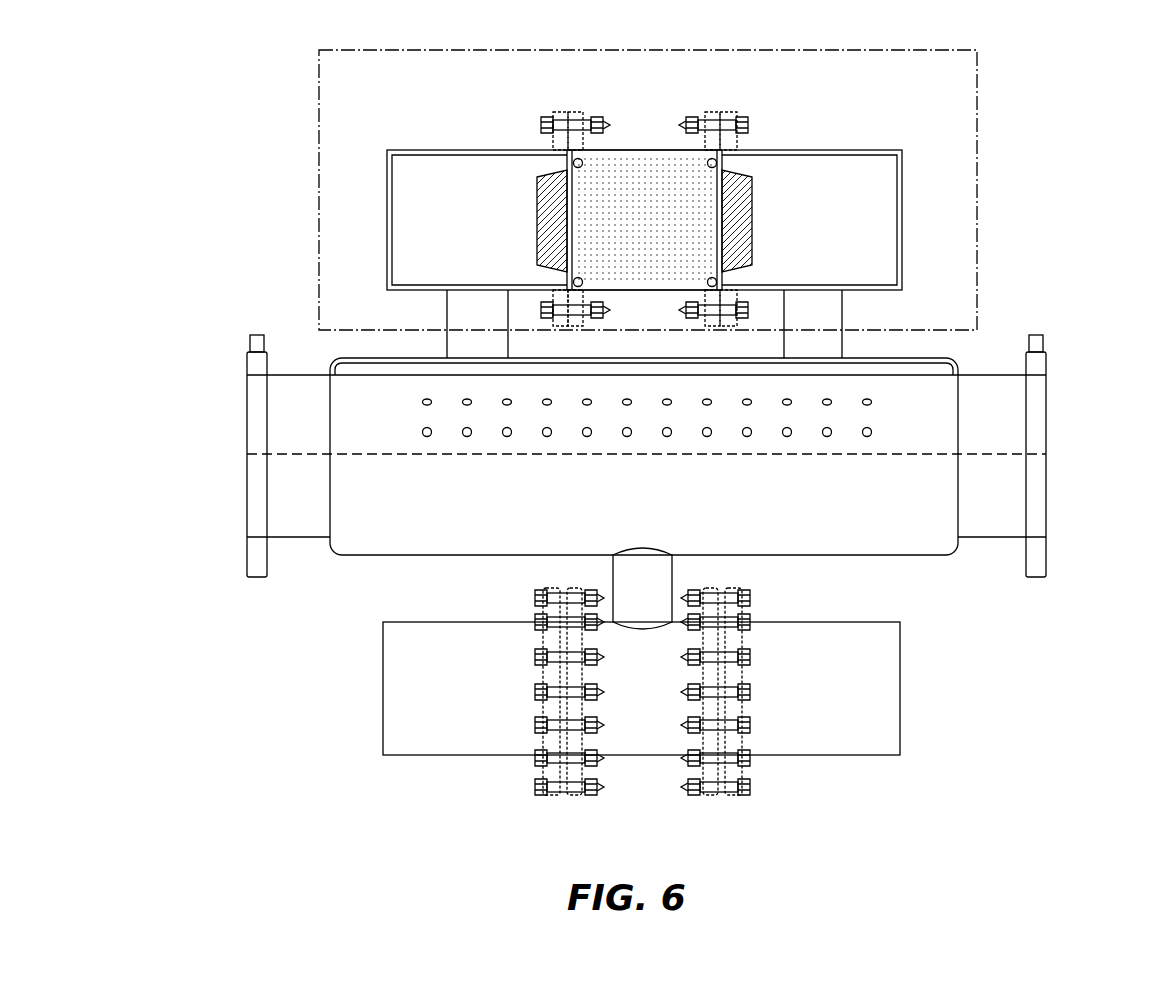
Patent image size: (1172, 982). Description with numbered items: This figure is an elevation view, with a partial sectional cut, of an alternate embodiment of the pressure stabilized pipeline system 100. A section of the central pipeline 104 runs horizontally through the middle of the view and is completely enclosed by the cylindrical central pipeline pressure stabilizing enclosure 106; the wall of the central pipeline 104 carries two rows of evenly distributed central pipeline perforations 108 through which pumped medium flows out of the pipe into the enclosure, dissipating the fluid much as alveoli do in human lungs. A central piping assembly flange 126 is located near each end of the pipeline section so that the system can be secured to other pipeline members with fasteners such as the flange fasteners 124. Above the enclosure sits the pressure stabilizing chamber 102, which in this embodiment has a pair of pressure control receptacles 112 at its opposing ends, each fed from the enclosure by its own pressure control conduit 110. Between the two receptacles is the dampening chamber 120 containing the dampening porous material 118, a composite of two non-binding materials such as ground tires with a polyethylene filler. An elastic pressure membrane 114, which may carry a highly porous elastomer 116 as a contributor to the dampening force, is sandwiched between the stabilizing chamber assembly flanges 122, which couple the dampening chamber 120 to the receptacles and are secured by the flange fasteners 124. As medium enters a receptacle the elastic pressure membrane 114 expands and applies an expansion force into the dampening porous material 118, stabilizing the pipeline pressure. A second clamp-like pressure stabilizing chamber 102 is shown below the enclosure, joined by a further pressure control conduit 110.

The pressure stabilized pipeline system 100 is at (657, 439).
The pressure stabilizing chamber 102 is at (977, 195).
The central pipeline 104 is at (305, 520).
The cylindrical central pipeline pressure stabilizing enclosure 106 is at (437, 538).
The central pipeline perforations 108 is at (506, 406).
The pressure control conduit 110 is at (472, 321).
The pressure control receptacle 112 is at (430, 184).
The elastic pressure membrane 114 is at (755, 207).
The highly porous elastomer 116 is at (740, 230).
The dampening porous material 118 is at (660, 172).
The dampening chamber 120 is at (615, 150).
The stabilizing chamber assembly flange 122 is at (556, 114).
The flange fastener 124 is at (745, 116).
The central piping assembly flange 126 is at (258, 490).